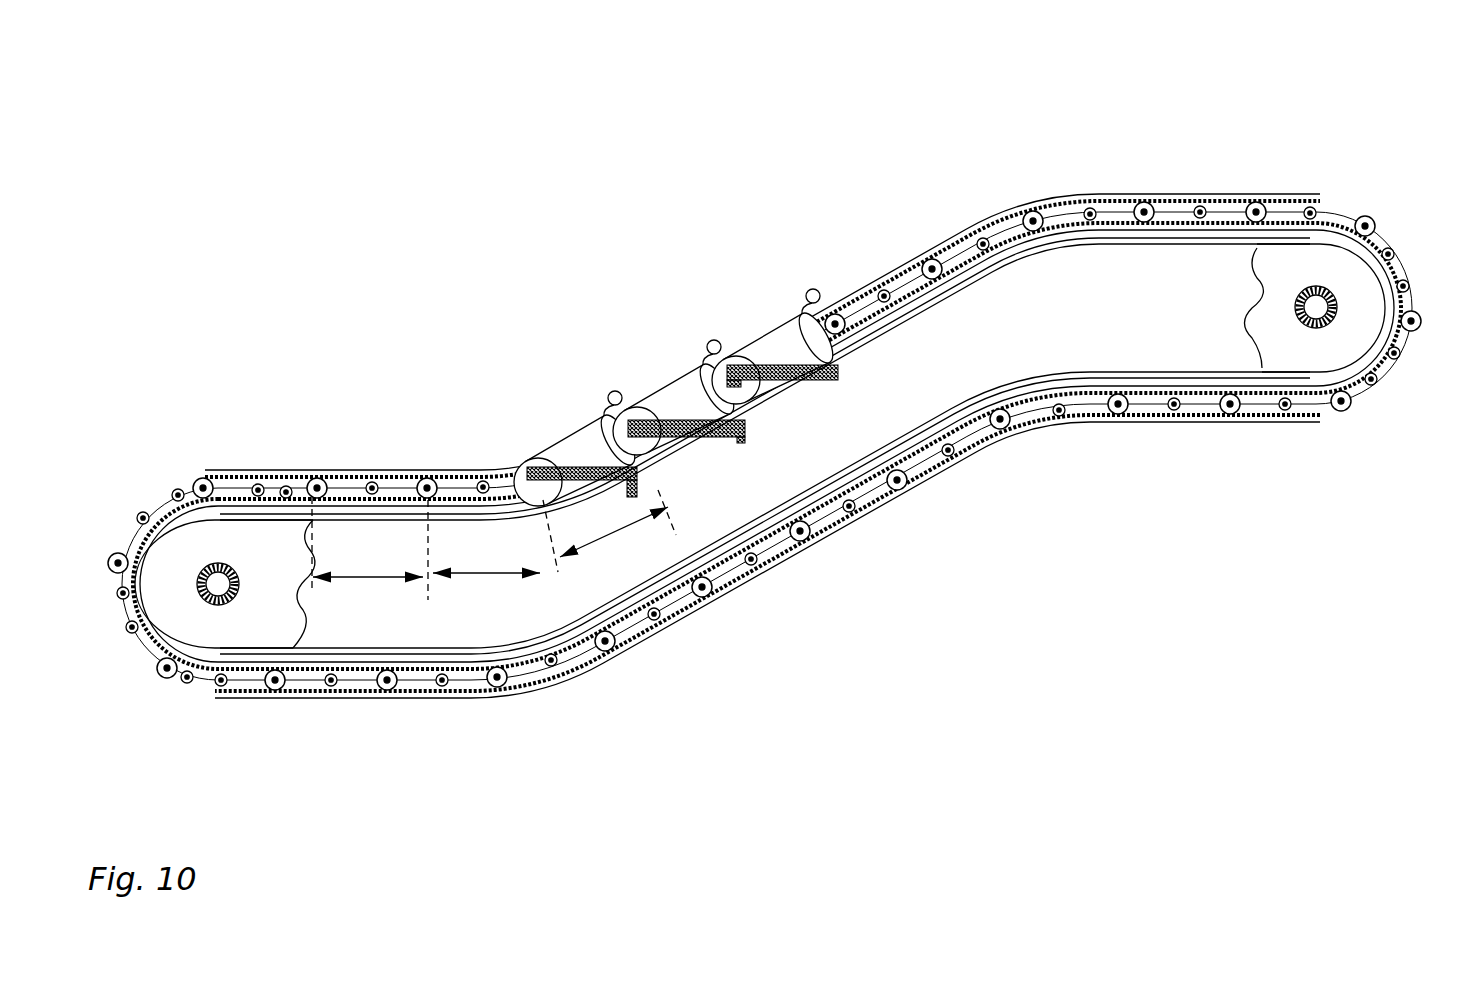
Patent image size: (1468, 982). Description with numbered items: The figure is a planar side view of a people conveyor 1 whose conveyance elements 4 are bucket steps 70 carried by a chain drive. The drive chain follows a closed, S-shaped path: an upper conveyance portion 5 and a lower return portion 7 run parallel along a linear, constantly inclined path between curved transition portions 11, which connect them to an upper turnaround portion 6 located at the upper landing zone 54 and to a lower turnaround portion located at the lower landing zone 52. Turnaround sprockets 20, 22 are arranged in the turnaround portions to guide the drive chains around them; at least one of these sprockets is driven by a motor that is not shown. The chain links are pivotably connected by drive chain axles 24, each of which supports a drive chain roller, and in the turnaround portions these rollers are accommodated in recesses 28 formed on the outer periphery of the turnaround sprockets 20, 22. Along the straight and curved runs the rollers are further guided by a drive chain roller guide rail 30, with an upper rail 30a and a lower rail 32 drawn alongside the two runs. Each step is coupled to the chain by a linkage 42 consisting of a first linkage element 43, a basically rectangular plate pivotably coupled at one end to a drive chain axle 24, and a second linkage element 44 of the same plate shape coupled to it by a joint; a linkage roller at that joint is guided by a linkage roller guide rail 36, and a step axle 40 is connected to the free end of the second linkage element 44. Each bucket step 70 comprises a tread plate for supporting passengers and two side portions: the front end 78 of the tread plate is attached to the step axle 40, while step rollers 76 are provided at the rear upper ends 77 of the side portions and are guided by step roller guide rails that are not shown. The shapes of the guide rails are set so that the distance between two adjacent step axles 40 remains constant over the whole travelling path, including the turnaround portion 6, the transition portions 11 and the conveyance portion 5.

The escalator 1 is at (403, 120).
The conveyance element 4 is at (577, 352).
The conveyance portion 5 is at (813, 196).
The upper turnaround portion 6 is at (1413, 158).
The return portion 7 is at (797, 598).
The curved transition portion 11 is at (1013, 186).
The turnaround sprocket 20 is at (236, 632).
The turnaround sprocket 22 is at (1341, 363).
The drive chain axle 24 is at (1410, 268).
The recess 28 is at (1212, 314).
The drive chain roller guide rail 30 is at (1162, 231).
The upper guide rail 30a is at (1211, 192).
The lower guide rail 32 is at (1092, 372).
The linkage roller guide rail 36 is at (1348, 212).
The step axle 40 is at (542, 484).
The linkage 42 is at (294, 486).
The first linkage element 43 is at (253, 486).
The second linkage element 44 is at (118, 556).
The lower landing zone 52 is at (351, 396).
The upper landing zone 54 is at (1280, 126).
The bucket step 70 is at (557, 400).
The step roller 76 is at (616, 380).
The rear upper end 77 is at (610, 400).
The front end 78 is at (546, 522).